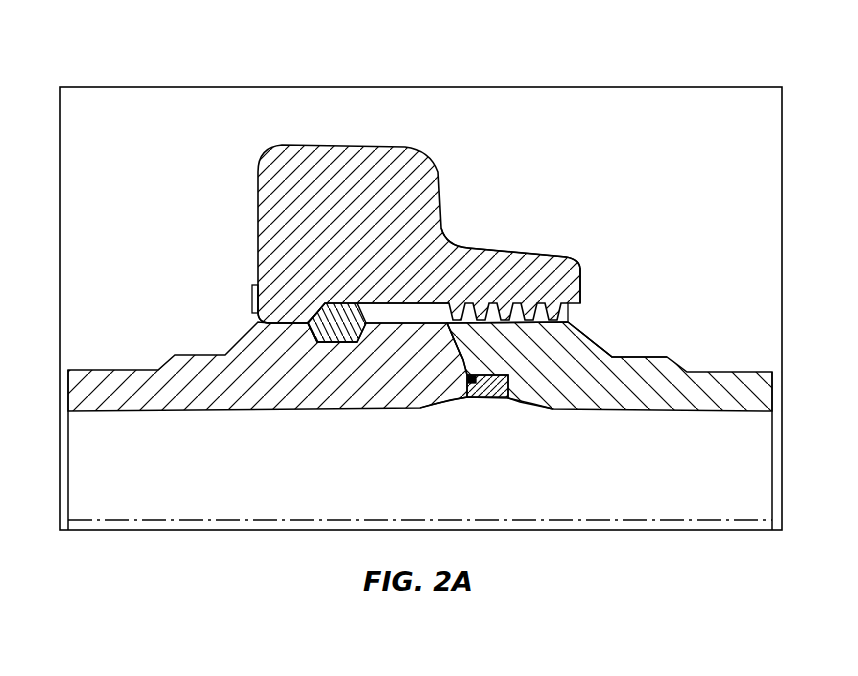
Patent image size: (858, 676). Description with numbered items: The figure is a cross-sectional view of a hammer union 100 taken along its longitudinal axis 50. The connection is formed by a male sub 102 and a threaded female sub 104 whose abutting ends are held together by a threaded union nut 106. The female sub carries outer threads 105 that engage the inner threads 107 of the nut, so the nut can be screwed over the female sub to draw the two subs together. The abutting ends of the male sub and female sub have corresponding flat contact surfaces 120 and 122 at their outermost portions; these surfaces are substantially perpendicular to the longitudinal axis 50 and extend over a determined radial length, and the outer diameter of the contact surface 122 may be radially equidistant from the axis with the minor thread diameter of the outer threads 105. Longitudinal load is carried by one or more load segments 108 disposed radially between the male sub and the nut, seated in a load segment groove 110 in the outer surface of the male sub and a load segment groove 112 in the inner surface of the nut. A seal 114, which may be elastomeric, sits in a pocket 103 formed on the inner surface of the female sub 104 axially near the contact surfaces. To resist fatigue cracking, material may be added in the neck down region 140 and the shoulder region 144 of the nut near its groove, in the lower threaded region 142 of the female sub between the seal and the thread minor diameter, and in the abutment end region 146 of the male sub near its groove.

The hammer union 100 is at (668, 48).
The longitudinal axis 50 is at (627, 520).
The male sub 102 is at (193, 355).
The pocket 103 is at (490, 400).
The threaded female sub 104 is at (643, 357).
The outer threads 105 is at (582, 312).
The threaded union nut 106 is at (313, 140).
The inner threads 107 is at (583, 280).
The load segments 108 is at (347, 302).
The load segment groove 110 is at (338, 343).
The load segment groove 112 is at (443, 301).
The seal 114 is at (475, 398).
The flat contact surface 120 is at (443, 328).
The flat contact surface 122 is at (447, 325).
The neck down region 140 is at (512, 250).
The lower threaded region 142 is at (592, 330).
The shoulder region 144 is at (252, 292).
The abutment end region 146 is at (320, 344).